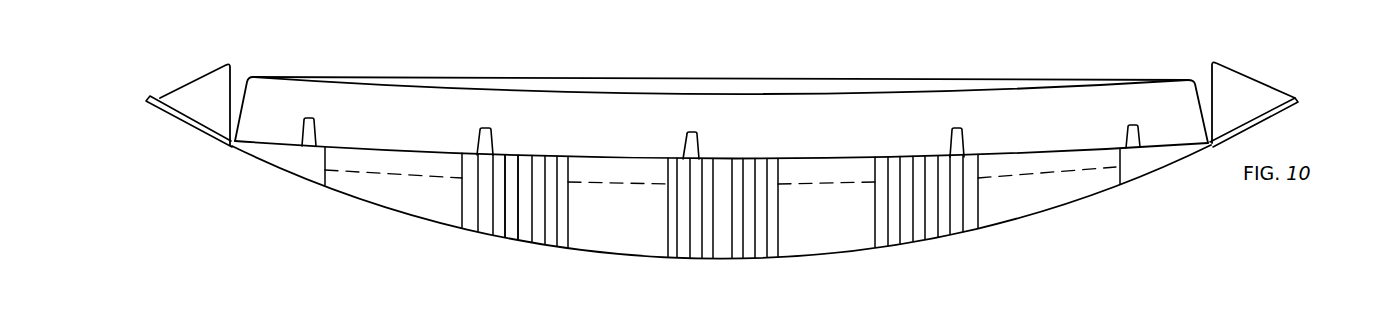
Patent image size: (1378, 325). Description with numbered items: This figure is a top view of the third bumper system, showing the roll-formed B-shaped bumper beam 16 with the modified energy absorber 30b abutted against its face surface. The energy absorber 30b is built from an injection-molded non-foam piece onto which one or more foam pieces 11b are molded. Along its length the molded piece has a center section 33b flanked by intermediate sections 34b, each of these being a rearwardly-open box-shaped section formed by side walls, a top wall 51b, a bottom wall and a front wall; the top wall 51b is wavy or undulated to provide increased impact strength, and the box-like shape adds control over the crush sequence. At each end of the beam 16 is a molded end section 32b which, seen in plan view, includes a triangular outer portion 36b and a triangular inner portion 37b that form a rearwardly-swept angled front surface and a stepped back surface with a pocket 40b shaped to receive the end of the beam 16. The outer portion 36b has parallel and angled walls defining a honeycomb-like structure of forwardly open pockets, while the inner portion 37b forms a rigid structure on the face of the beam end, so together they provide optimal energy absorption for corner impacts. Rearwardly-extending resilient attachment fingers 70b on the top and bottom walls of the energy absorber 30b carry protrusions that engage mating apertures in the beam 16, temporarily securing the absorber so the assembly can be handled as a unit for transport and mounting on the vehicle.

The bumper beam 16 is at (745, 105).
The energy absorber 30b is at (442, 247).
The foam pieces 11b is at (407, 200).
The end sections 32b is at (231, 172).
The center section 33b is at (726, 259).
The intermediate sections 34b is at (536, 245).
The triangular outer portion 36b is at (185, 127).
The triangular inner portion 37b is at (281, 172).
The pocket 40b is at (187, 98).
The top wall 51b is at (513, 229).
The attachment fingers 70b is at (312, 116).